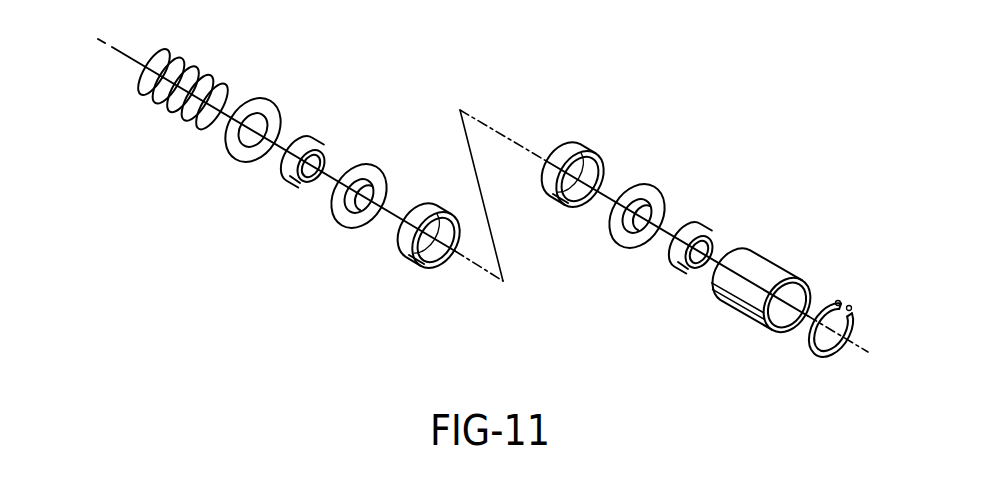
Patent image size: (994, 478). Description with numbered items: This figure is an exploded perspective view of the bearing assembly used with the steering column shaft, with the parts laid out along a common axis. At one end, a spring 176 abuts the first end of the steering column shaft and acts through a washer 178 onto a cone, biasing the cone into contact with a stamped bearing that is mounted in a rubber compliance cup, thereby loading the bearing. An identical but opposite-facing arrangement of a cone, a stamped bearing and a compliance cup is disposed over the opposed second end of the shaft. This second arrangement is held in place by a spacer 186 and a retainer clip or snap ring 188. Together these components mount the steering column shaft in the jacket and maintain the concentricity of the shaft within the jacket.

The spring 176 is at (157, 102).
The washer 178 is at (233, 152).
The spacer 186 is at (736, 305).
The snap ring 188 is at (820, 353).